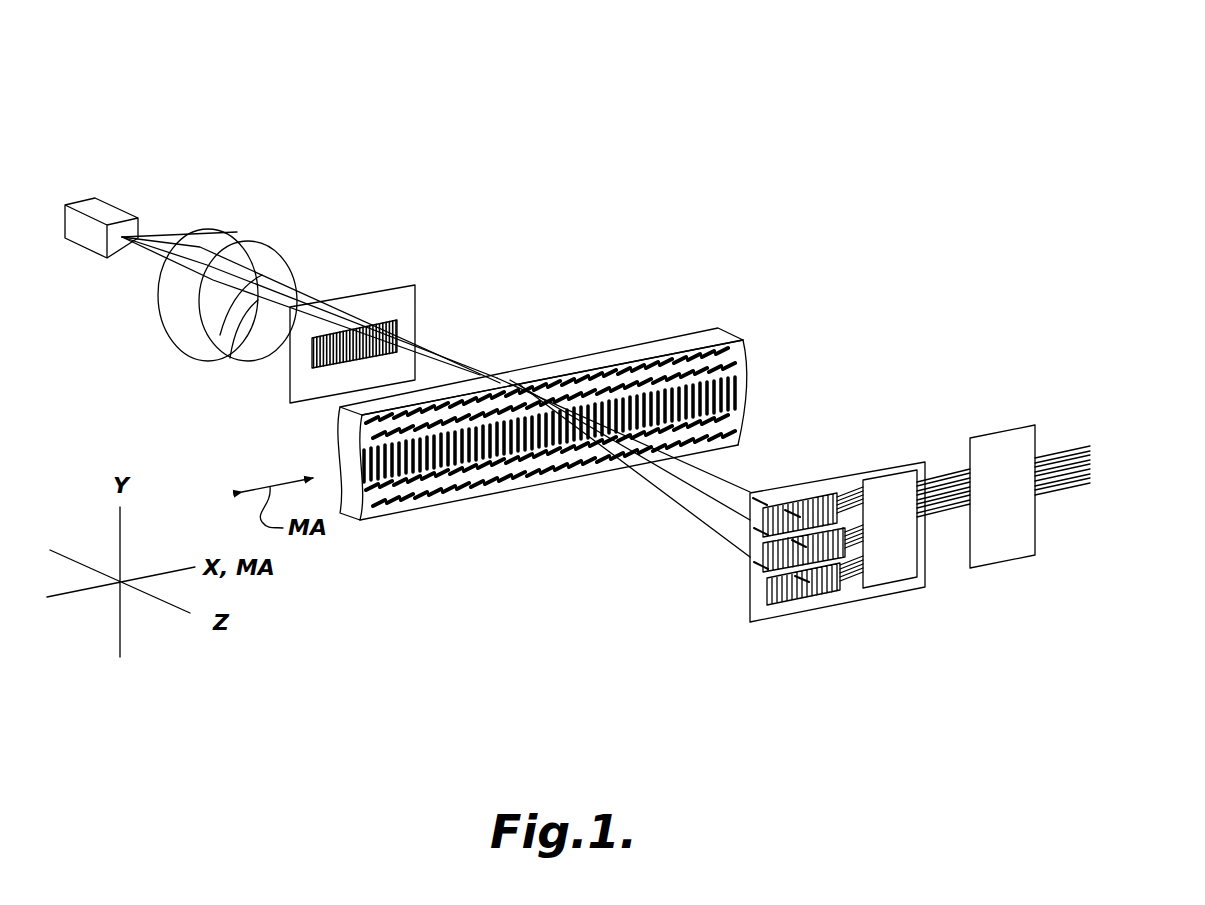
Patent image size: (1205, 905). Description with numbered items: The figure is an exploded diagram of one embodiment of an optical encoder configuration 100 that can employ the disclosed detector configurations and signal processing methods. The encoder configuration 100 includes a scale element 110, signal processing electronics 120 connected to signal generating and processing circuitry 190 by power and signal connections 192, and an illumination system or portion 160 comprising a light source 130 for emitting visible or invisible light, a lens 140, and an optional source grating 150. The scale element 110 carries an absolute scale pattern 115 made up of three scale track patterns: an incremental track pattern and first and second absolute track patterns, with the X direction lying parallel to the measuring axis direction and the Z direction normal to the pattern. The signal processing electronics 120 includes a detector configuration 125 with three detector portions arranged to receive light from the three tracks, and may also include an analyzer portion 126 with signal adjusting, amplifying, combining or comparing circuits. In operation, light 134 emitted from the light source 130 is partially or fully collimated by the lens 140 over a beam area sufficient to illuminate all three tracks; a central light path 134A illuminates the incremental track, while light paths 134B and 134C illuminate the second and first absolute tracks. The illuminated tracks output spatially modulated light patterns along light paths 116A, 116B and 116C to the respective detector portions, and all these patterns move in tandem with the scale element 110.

The optical encoder configuration 100 is at (1095, 90).
The scale element 110 is at (662, 391).
The absolute scale pattern 115 is at (750, 352).
The light path 116A is at (750, 521).
The light path 116B is at (750, 493).
The light path 116C is at (750, 557).
The signal processing electronics 120 is at (716, 532).
The detector configuration 125 is at (750, 522).
The analyzer portion 126 is at (868, 478).
The light source 130 is at (108, 212).
The light 134 is at (212, 307).
The light path 134A is at (226, 357).
The light path 134B is at (206, 340).
The light path 134C is at (260, 342).
The lens 140 is at (237, 232).
The optional source grating 150 is at (372, 290).
The illumination system or portion 160 is at (578, 150).
The signal generating and processing circuitry 190 is at (985, 437).
The power and signal connections 192 is at (942, 473).